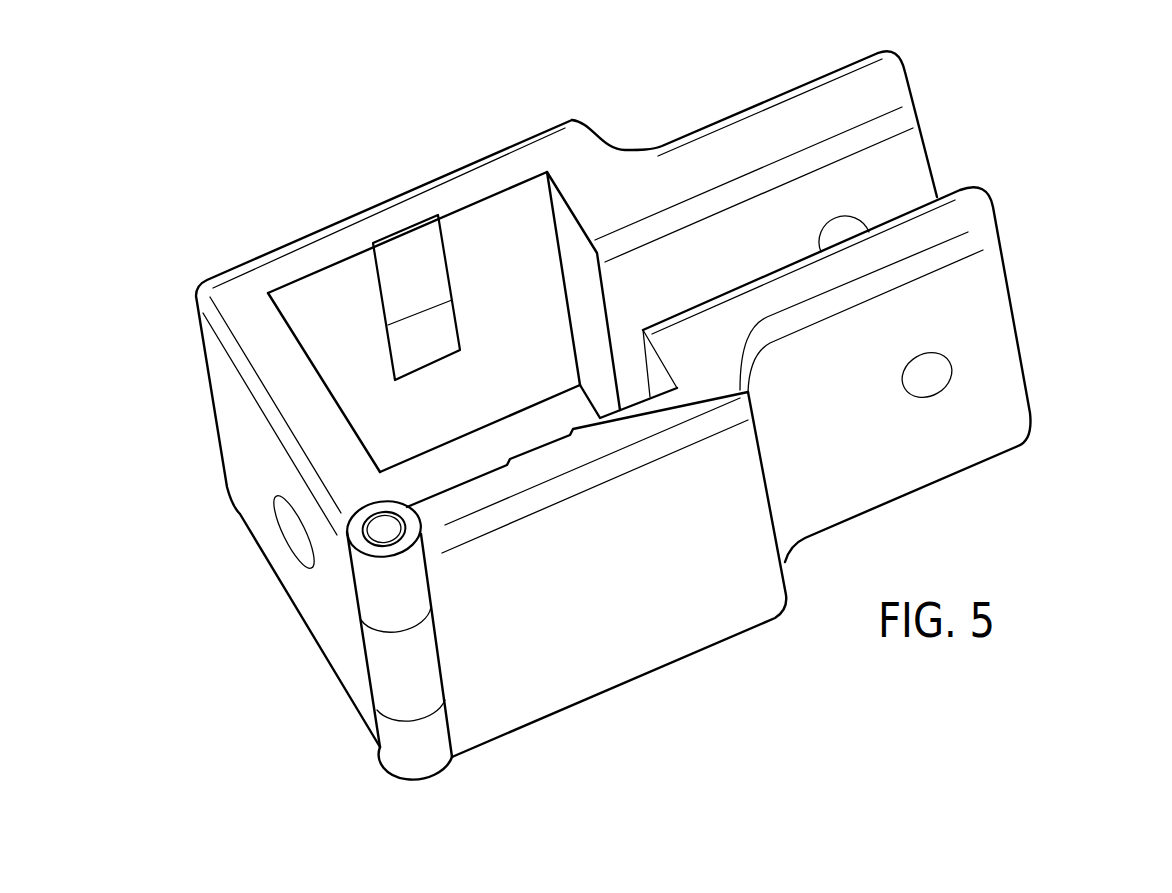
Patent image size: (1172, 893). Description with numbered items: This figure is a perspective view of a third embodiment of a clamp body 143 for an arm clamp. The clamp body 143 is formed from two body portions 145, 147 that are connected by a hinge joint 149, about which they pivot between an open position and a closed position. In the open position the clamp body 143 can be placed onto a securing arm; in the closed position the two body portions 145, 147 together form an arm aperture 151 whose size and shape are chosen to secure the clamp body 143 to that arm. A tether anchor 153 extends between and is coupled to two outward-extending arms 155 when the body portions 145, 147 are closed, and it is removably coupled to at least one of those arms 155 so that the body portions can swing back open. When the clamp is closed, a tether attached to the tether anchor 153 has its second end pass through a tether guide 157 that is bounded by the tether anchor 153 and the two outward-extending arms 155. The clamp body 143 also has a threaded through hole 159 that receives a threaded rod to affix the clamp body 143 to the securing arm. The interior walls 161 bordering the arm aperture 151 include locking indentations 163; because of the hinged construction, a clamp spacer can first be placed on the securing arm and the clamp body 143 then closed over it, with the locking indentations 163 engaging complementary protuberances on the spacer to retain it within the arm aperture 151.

The clamp body 143 is at (579, 121).
The body portion 145 is at (223, 287).
The body portion 147 is at (527, 672).
The hinge joint 149 is at (377, 529).
The arm aperture 151 is at (513, 246).
The tether anchor 153 is at (938, 373).
The outward-extending arms 155 is at (905, 73).
The tether guide 157 is at (780, 244).
The threaded through hole 159 is at (283, 537).
The interior walls 161 is at (340, 282).
The locking indentations 163 is at (410, 247).